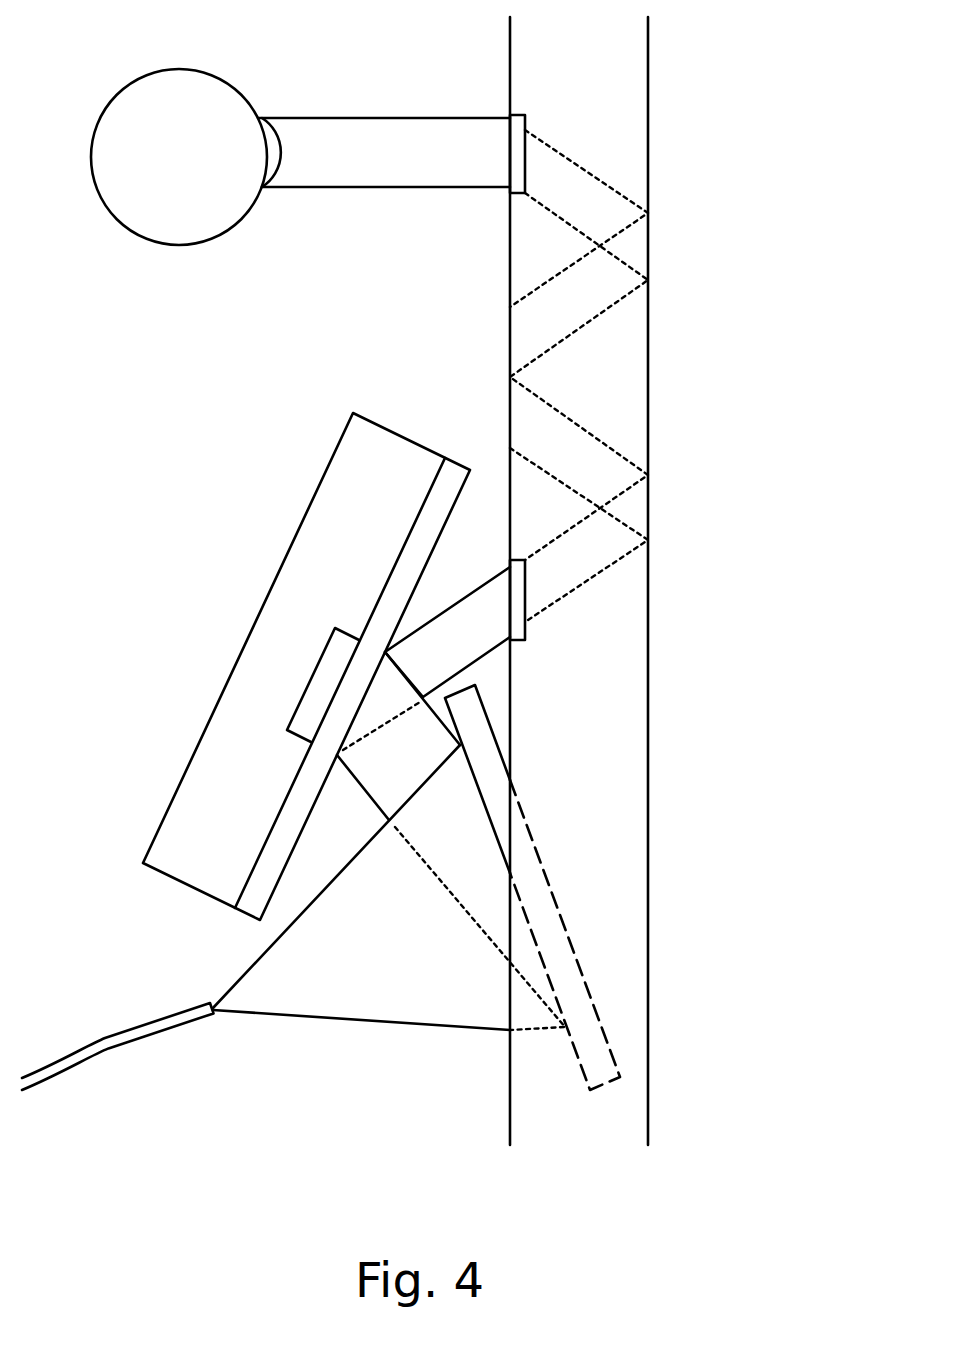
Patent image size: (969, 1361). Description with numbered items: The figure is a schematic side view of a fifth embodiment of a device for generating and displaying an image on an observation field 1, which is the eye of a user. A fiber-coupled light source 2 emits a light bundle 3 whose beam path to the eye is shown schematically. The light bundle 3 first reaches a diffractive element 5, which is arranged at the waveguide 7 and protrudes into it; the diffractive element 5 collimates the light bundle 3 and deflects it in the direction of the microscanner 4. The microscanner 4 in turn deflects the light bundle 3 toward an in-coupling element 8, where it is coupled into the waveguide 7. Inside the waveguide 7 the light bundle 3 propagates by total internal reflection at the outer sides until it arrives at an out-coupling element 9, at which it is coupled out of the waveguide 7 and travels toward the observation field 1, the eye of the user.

The observation field 1 is at (267, 153).
The light source 2 is at (168, 1028).
The light bundle 3 is at (350, 1020).
The microscanner 4 is at (243, 647).
The diffractive element 5 is at (572, 952).
The waveguide 7 is at (648, 343).
The in-coupling element 8 is at (525, 633).
The out-coupling element 9 is at (525, 178).